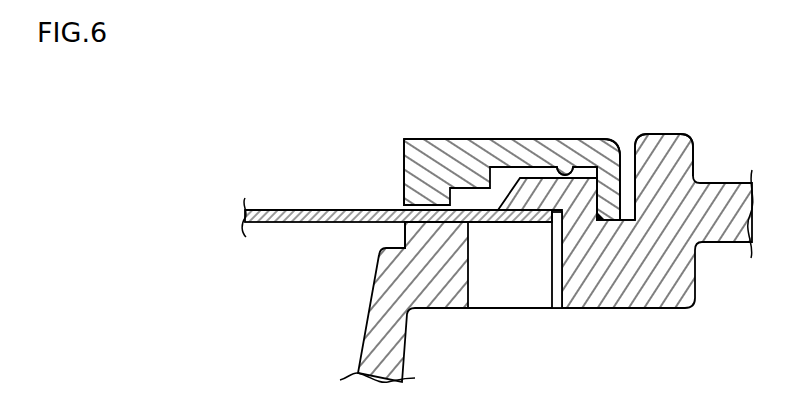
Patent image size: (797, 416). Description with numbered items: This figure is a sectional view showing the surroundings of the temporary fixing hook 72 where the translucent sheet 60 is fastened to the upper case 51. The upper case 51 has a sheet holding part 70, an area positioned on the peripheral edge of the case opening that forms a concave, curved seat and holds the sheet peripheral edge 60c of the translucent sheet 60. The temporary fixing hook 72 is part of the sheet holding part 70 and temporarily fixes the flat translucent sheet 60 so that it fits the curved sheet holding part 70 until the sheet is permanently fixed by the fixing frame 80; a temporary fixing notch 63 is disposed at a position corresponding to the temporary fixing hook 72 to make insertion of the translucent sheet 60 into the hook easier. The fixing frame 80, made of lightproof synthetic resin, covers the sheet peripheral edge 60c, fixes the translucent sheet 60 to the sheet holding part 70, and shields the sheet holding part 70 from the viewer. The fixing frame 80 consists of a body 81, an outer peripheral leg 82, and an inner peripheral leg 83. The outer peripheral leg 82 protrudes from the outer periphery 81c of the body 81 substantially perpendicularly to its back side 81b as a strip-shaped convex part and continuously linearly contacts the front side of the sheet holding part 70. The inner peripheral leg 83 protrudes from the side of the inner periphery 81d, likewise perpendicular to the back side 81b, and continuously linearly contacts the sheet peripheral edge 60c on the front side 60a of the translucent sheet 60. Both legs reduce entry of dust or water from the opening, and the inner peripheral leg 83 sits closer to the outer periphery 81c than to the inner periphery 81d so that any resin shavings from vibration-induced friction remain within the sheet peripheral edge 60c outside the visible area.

The upper case 51 is at (660, 308).
The outer peripheral leg 82 is at (612, 197).
The sheet holding part 70 is at (455, 225).
The inner peripheral leg 83 is at (403, 232).
The temporary fixing notch 63 is at (556, 250).
The translucent sheet 60 is at (278, 210).
The front side of translucent sheet 60a is at (348, 208).
The sheet peripheral edge 60c is at (490, 223).
The temporary fixing hook 72 is at (518, 223).
The fixing frame 80 is at (525, 139).
The body 81 is at (448, 140).
The inner periphery 81d is at (407, 138).
The back side 81b is at (566, 166).
The outer periphery 81c is at (612, 152).